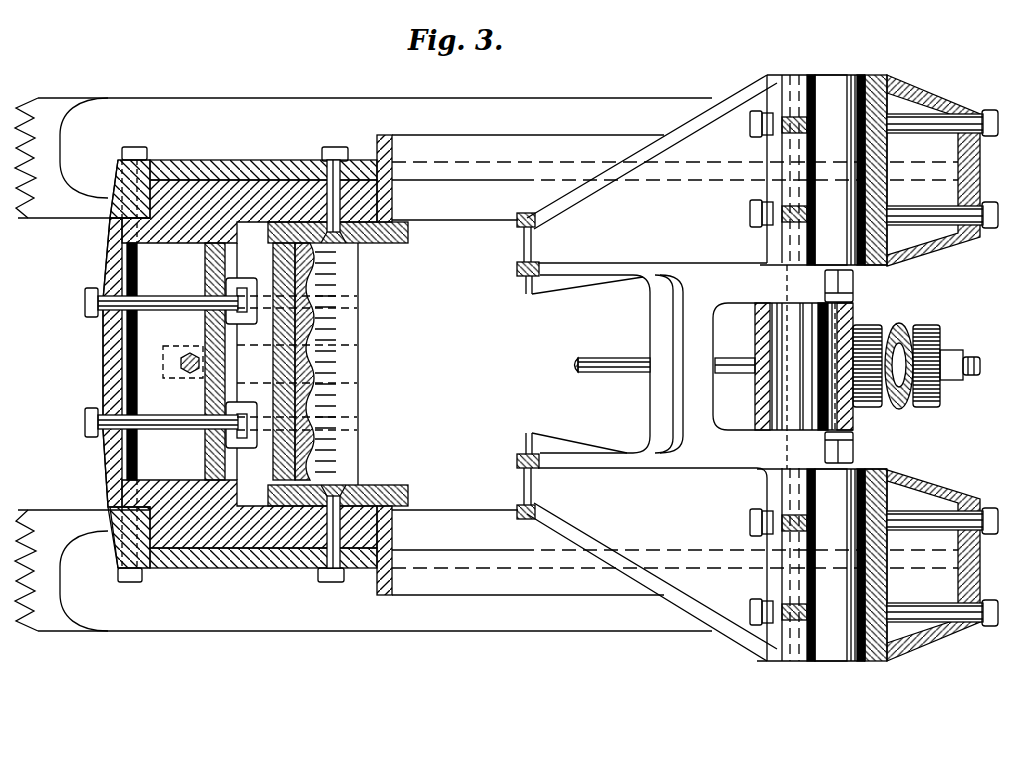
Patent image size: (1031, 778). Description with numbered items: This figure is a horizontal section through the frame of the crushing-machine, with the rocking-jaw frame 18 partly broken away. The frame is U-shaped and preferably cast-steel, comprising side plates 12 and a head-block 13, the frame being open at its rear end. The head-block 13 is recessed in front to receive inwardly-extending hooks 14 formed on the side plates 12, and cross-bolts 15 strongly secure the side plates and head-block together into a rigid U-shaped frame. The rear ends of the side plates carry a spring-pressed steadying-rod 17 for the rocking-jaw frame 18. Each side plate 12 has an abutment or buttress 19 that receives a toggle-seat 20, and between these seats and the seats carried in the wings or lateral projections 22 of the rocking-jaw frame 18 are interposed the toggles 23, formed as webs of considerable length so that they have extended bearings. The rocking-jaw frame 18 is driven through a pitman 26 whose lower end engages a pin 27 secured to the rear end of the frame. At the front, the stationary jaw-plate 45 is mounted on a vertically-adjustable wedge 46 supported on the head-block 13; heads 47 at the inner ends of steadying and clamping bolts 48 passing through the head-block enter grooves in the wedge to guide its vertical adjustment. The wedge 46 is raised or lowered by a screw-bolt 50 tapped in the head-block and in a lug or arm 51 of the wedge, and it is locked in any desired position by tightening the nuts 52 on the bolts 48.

The side plates 12 is at (486, 364).
The head-block 13 is at (106, 360).
The inwardly-extending hooks 14 is at (126, 179).
The cross-bolts 15 is at (138, 328).
The spring-pressed steadying-rod 17 is at (618, 374).
The rocking-jaw frame 18 is at (627, 368).
The abutment or buttress 19 is at (898, 90).
The toggle-seat 20 is at (870, 80).
The wings or lateral projections 22 is at (772, 546).
The toggles 23 is at (827, 84).
The pitman 26 is at (850, 313).
The pin 27 is at (805, 413).
The stationary jaw-plate 45 is at (345, 332).
The vertically-adjustable wedge 46 is at (282, 257).
The heads 47 is at (230, 293).
The steadying and clamping bolts 48 is at (158, 297).
The screw-bolt 50 is at (180, 363).
The lug or arm 51 is at (297, 363).
The nuts 52 is at (86, 296).